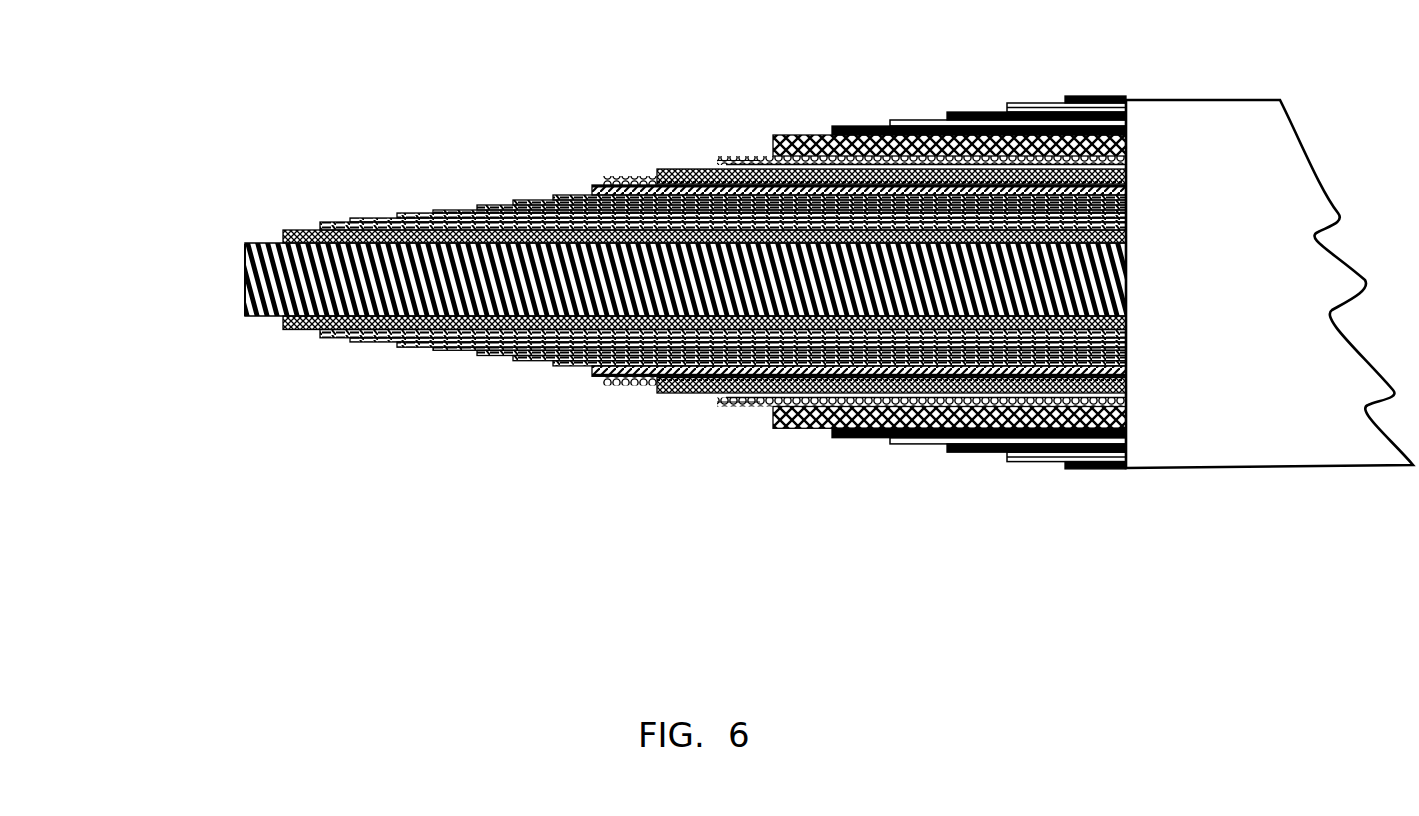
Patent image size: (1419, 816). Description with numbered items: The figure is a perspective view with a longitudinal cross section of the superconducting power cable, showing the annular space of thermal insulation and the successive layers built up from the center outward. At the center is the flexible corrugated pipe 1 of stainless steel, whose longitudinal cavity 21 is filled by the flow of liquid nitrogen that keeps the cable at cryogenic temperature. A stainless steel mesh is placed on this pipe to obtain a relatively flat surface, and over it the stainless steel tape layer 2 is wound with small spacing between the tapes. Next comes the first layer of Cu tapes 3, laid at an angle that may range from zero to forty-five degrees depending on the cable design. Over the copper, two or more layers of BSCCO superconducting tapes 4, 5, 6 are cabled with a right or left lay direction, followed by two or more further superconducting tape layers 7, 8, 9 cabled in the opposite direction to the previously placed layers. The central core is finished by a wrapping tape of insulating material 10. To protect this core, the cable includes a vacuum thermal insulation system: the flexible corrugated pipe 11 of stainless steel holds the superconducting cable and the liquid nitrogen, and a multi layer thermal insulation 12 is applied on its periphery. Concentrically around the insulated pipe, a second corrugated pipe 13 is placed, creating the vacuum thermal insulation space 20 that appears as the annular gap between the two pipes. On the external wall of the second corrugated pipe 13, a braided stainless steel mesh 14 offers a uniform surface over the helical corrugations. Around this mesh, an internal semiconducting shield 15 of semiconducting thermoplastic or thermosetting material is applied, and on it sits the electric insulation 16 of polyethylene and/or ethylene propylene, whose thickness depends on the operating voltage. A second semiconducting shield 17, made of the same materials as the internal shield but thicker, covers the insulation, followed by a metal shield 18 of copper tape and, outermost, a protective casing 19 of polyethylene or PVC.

The flexible corrugated pipe 1 is at (258, 243).
The stainless steel tape layer 2 is at (312, 229).
The first layer of Cu tapes 3 is at (355, 342).
The layer of superconducting tapes 4 is at (368, 217).
The layer of superconducting tapes 5 is at (413, 352).
The layer of superconducting tapes 6 is at (445, 209).
The layer of superconducting tapes 7 is at (497, 360).
The layer of superconducting tapes 8 is at (505, 204).
The layer of superconducting tapes 9 is at (567, 370).
The wrapping tape of insulating material 10 is at (592, 184).
The flexible corrugated pipe 11 is at (628, 386).
The multi layer thermal insulation 12 is at (660, 170).
The second corrugated pipe 13 is at (735, 410).
The braided stainless steel mesh 14 is at (793, 135).
The internal semiconducting shield 15 is at (852, 440).
The electric insulation 16 is at (898, 119).
The second semiconducting shield 17 is at (978, 458).
The metal shield 18 is at (1025, 106).
The protective casing 19 is at (1080, 468).
The vacuum thermal insulation space 20 is at (750, 153).
The longitudinal cavity 21 is at (245, 276).